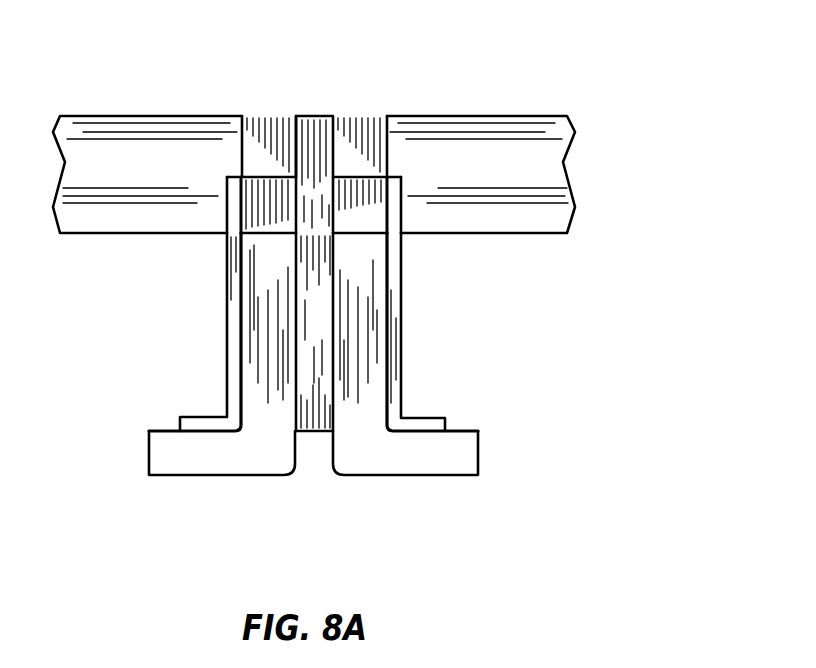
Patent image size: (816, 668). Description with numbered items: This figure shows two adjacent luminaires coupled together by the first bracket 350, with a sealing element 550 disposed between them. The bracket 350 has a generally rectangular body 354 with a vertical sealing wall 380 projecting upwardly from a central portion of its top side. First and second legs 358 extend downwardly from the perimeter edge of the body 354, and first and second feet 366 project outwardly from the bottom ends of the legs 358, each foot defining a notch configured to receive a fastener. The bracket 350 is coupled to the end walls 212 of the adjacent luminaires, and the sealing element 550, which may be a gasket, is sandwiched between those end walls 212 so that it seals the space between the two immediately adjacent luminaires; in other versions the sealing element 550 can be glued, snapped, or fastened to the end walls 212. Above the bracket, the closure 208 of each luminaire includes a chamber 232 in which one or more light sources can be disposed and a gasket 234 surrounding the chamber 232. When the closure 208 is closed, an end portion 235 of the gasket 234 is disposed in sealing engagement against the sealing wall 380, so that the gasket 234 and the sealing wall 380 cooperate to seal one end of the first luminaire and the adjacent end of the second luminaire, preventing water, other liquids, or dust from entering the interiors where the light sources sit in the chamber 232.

The closure 208 is at (136, 104).
The chamber 232 is at (127, 218).
The gasket 234 is at (266, 133).
The end portion 235 is at (294, 147).
The vertical sealing wall 380 is at (315, 116).
The first bracket 350 is at (405, 219).
The body 354 is at (338, 220).
The first and second legs 358 is at (224, 289).
The first and second feet 366 is at (211, 435).
The first end wall 212 is at (268, 452).
The sealing element 550 is at (314, 440).